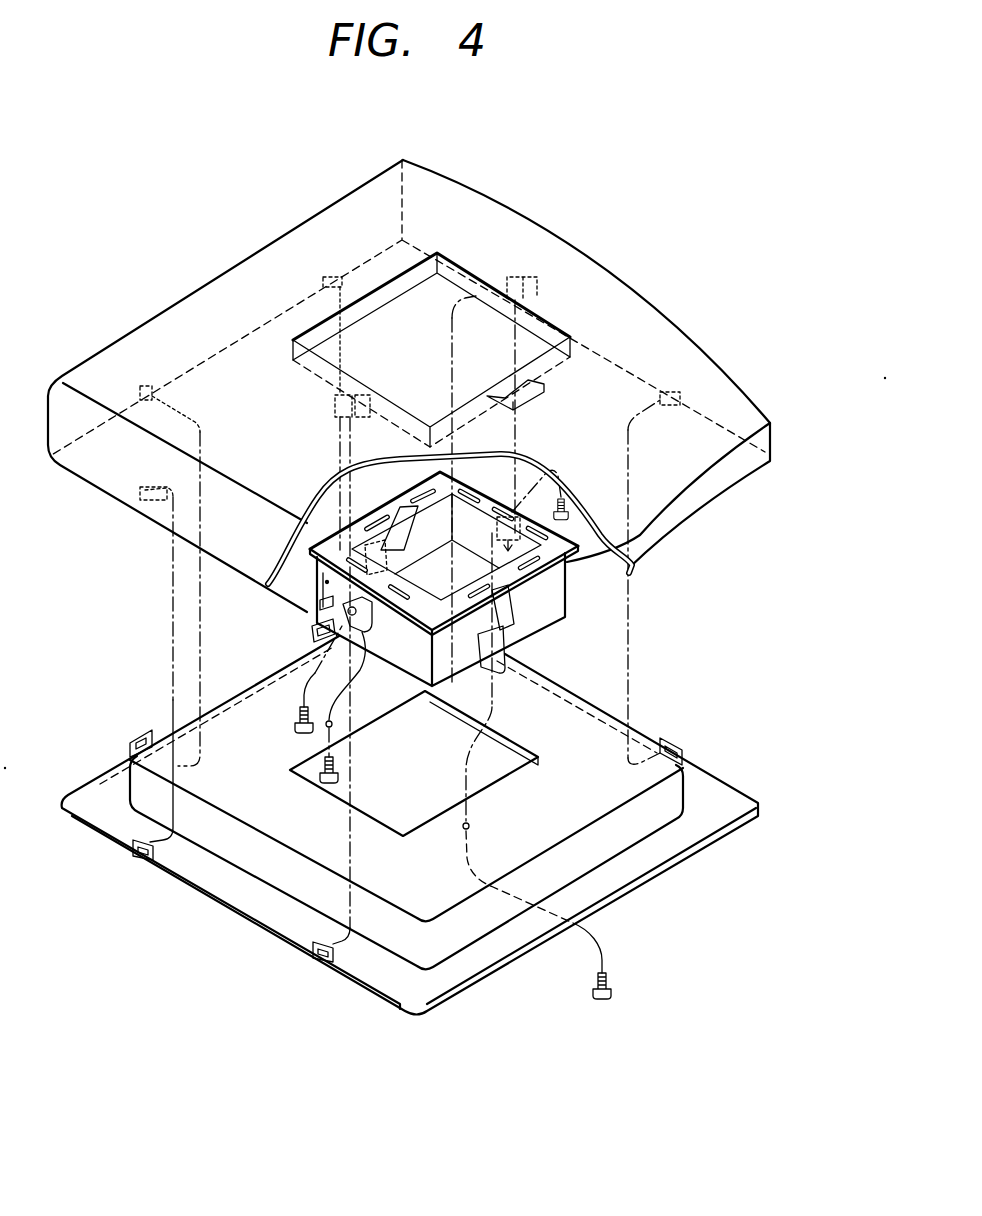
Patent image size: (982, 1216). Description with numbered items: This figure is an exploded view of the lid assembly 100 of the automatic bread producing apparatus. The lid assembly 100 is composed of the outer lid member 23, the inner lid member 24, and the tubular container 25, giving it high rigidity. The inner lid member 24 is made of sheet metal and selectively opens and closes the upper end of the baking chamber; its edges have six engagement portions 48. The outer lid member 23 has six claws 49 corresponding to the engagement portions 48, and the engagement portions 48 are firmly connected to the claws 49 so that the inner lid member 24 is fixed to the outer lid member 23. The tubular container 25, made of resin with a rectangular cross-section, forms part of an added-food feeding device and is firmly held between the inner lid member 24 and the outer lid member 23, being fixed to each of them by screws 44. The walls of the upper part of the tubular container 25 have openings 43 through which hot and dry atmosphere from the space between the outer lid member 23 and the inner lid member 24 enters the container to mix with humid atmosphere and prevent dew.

The lid assembly 100 is at (748, 362).
The outer lid member 23 is at (605, 283).
The claws 49 is at (141, 388).
The openings 43 is at (567, 560).
The tubular container 25 is at (533, 613).
The inner lid member 24 is at (210, 880).
The engagement portions 48 is at (290, 932).
The screws 44 is at (613, 995).